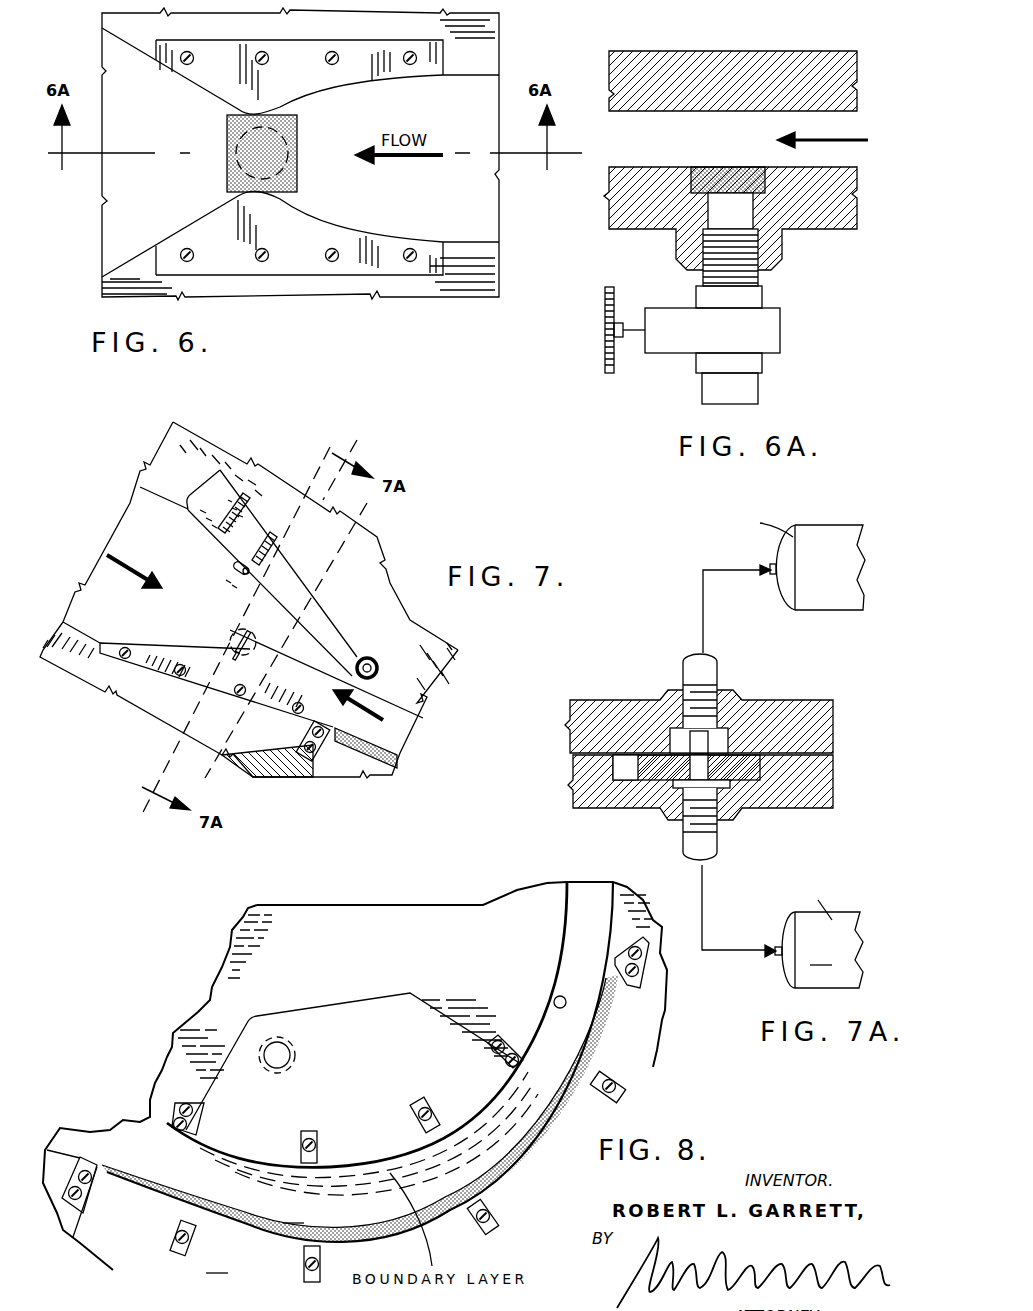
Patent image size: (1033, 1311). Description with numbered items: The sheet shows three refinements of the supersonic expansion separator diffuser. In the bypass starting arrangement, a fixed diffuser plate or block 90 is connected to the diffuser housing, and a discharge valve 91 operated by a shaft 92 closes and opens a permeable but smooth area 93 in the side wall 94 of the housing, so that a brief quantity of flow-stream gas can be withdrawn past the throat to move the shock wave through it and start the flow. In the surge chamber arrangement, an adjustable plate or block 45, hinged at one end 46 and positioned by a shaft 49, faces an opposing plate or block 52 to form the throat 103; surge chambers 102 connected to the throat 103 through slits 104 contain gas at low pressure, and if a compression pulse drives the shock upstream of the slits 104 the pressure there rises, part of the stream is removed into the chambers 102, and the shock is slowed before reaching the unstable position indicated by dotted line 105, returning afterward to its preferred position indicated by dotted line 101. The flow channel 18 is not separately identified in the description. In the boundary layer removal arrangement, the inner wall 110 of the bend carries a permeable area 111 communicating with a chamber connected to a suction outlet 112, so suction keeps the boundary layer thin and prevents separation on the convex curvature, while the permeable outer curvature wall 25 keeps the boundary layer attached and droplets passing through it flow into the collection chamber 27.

In FIG. 7, the flow channel 18 is at (397, 722).
In FIG. 8, the flow channel 18 is at (367, 1052).
In FIG. 7, the permeable wall 25 is at (387, 770).
In FIG. 8, the permeable wall 25 is at (523, 1157).
In FIG. 8, the collection chamber 27 is at (355, 1077).
In FIG. 7, the adjustable plate or block member 45 is at (217, 542).
In FIG. 7A, the adjustable plate or block member 45 is at (670, 748).
In FIG. 7, the hinged end 46 is at (376, 664).
In FIG. 7, the shaft 49 is at (270, 545).
In FIG. 7, the opposing adjustable plate or block 52 is at (142, 646).
In FIG. 7A, the opposing adjustable plate or block 52 is at (737, 773).
In FIG. 6, the fixed diffuser plate or block 90 is at (429, 60).
In FIG. 6A, the discharge valve 91 is at (755, 329).
In FIG. 6A, the shaft 92 is at (631, 327).
In FIG. 6, the permeable but smooth area 93 is at (260, 143).
In FIG. 6A, the permeable but smooth area 93 is at (727, 175).
In FIG. 6, the side wall 94 is at (487, 30).
In FIG. 6A, the side wall 94 is at (840, 211).
In FIG. 7, the dotted line 101 is at (183, 703).
In FIG. 7A, the surge chambers 102 is at (832, 575).
In FIG. 7, the throat 103 is at (253, 647).
In FIG. 7A, the throat 103 is at (697, 763).
In FIG. 7, the slits 104 is at (233, 628).
In FIG. 7A, the slits 104 is at (707, 740).
In FIG. 7, the dotted line 105 is at (333, 560).
In FIG. 8, the inner wall 110 is at (554, 995).
In FIG. 8, the permeable area 111 is at (473, 1100).
In FIG. 8, the suction outlet 112 is at (277, 1055).